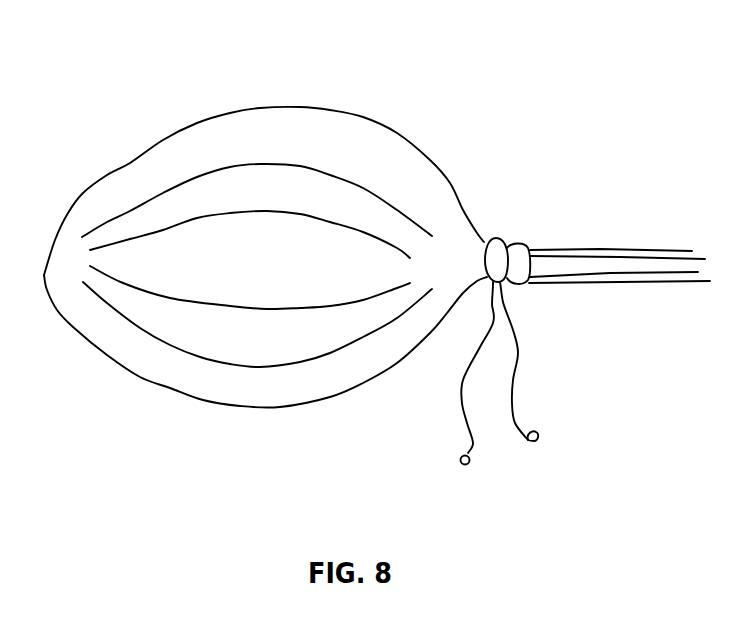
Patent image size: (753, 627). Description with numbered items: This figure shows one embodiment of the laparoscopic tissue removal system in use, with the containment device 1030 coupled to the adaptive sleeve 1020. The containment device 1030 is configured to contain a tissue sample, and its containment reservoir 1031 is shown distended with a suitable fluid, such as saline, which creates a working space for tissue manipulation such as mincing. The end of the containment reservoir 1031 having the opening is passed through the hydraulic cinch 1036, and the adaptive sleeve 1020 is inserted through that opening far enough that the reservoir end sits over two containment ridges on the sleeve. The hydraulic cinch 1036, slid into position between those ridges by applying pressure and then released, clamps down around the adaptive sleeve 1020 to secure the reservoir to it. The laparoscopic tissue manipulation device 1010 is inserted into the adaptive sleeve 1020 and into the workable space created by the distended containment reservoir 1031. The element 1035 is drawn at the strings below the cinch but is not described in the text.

The containment device 1030 is at (106, 100).
The containment reservoir 1031 is at (197, 120).
The hydraulic cinch 1036 is at (481, 237).
The adaptive sleeve 1020 is at (570, 233).
The laparoscopic tissue manipulation device 1010 is at (630, 253).
The tie strings 1035 is at (500, 348).